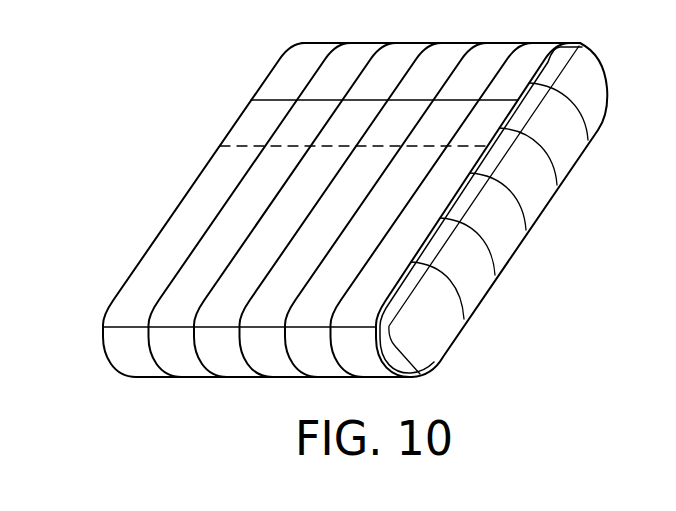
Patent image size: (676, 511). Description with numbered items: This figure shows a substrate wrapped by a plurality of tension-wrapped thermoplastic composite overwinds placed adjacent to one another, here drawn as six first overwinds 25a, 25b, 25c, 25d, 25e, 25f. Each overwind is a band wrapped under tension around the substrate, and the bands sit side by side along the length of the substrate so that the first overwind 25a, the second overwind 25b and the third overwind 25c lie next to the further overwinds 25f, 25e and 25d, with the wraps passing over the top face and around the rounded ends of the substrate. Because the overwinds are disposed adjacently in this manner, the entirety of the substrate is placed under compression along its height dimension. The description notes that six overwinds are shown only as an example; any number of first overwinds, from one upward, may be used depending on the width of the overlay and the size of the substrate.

The first overwind 25a is at (148, 288).
The first overwind 25b is at (197, 282).
The first overwind 25c is at (247, 270).
The first overwind 25d is at (377, 272).
The first overwind 25e is at (358, 232).
The first overwind 25f is at (345, 183).